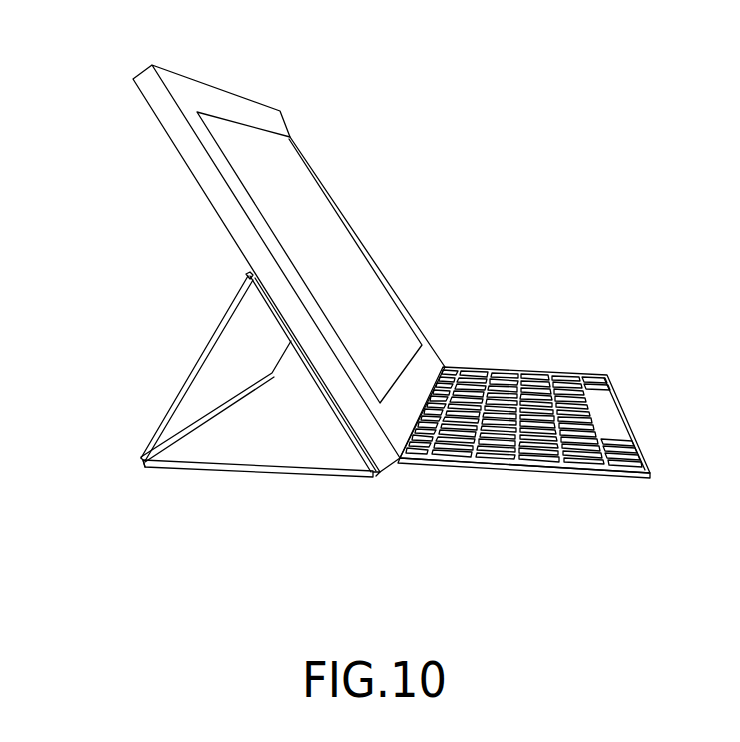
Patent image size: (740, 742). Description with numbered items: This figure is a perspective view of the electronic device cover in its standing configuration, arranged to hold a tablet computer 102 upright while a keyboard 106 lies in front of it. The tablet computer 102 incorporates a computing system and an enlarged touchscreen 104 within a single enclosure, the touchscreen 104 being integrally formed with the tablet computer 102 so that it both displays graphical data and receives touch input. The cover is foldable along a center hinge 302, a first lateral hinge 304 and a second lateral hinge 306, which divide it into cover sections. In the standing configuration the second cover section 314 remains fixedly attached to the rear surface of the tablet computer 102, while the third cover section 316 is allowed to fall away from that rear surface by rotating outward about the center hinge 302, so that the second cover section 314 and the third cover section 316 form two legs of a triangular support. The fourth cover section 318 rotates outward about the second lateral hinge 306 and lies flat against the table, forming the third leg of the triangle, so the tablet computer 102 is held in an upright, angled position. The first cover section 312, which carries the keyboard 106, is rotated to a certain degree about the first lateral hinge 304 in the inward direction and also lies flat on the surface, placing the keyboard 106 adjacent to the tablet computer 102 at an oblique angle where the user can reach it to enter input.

The tablet computer 102 is at (258, 113).
The touchscreen 104 is at (332, 215).
The keyboard 106 is at (580, 412).
The center hinge 302 is at (237, 265).
The first lateral hinge 304 is at (382, 491).
The second lateral hinge 306 is at (128, 466).
The first cover section 312 is at (572, 474).
The second cover section 314 is at (272, 373).
The third cover section 316 is at (185, 378).
The fourth cover section 318 is at (238, 468).